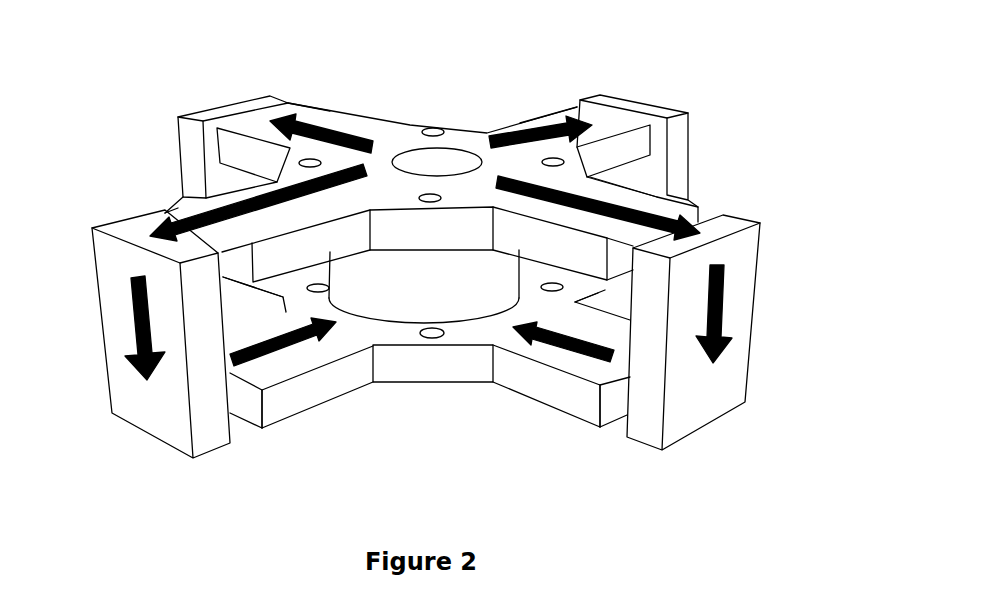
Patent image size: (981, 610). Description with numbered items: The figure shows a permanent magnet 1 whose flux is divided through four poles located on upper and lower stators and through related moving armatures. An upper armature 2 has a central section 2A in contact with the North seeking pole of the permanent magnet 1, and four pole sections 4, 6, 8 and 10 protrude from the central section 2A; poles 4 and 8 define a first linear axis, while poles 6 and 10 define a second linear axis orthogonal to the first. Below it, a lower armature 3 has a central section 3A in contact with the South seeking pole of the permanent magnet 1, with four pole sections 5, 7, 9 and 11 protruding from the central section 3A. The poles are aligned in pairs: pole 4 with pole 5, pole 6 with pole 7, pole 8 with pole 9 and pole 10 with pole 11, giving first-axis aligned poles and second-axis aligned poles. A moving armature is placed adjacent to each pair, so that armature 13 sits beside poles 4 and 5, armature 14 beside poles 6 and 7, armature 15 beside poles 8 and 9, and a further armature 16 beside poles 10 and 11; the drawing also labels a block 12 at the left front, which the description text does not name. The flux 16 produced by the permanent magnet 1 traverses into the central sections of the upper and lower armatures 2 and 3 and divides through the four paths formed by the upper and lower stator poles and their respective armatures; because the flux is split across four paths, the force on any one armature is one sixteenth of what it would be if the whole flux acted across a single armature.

The permanent magnet 1 is at (463, 295).
The upper armature 2 is at (478, 132).
The central section 2A is at (406, 128).
The lower armature 3 is at (355, 334).
The central section 3A is at (392, 332).
The pole section 4 is at (658, 193).
The pole section 5 is at (588, 400).
The pole section 6 is at (550, 108).
The pole section 7 is at (598, 294).
The pole section 8 is at (325, 112).
The pole section 9 is at (267, 295).
The pole section 10 is at (163, 212).
The pole section 11 is at (247, 399).
The pole block 12 is at (175, 420).
The moving armature 13 is at (700, 395).
The moving armature 14 is at (675, 155).
The moving armature 15 is at (272, 97).
The flux 16 is at (265, 122).